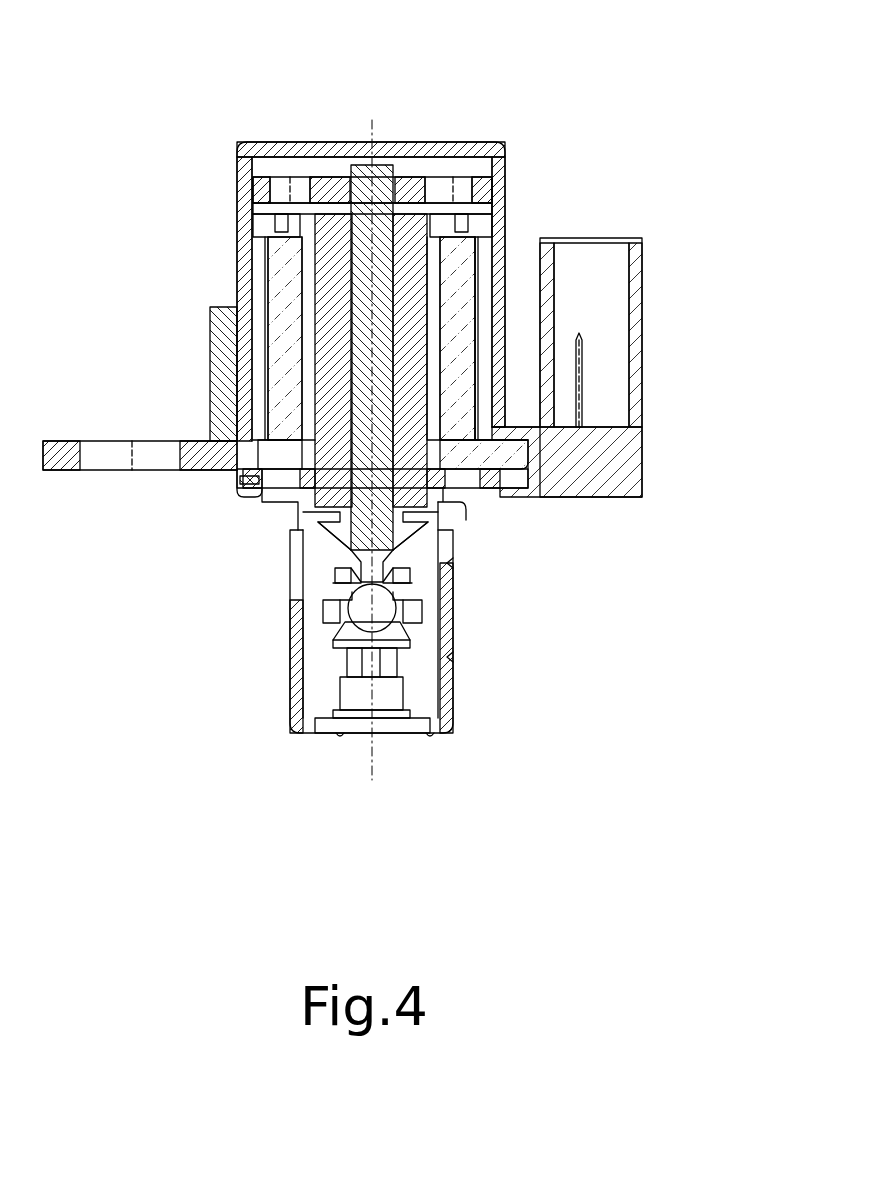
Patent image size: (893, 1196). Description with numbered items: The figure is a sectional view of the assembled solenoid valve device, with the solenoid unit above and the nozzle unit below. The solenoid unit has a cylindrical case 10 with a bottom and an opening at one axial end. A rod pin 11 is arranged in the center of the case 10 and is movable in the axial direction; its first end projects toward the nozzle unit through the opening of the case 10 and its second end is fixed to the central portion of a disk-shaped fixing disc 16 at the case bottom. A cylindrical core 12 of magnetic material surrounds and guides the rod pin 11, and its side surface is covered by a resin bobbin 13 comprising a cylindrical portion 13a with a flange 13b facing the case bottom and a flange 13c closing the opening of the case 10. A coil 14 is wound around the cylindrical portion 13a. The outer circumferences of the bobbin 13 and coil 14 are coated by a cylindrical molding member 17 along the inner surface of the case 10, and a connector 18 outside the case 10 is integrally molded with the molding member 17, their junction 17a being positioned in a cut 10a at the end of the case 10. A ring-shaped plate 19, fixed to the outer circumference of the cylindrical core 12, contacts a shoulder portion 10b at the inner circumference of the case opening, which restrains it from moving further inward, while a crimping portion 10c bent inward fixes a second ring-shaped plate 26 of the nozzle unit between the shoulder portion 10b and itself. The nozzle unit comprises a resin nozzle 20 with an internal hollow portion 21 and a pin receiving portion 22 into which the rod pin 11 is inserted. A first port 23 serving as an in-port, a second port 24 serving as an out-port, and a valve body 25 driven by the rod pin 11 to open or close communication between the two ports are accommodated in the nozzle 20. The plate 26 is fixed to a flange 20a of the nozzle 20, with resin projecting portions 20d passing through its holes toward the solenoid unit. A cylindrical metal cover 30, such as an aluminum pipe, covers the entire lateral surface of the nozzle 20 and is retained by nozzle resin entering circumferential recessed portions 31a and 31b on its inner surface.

The case 10 is at (372, 148).
The cut 10a is at (502, 423).
The shoulder portion 10b is at (238, 462).
The crimping portion 10c is at (258, 492).
The rod pin 11 is at (364, 186).
The cylindrical core 12 is at (418, 225).
The bobbin 13 is at (305, 323).
The cylindrical portion 13a is at (310, 287).
The flange 13b is at (265, 222).
The flange 13c is at (512, 455).
The coil 14 is at (455, 253).
The fixing disc 16 is at (262, 147).
The molding member 17 is at (485, 258).
The junction 17a is at (533, 433).
The connector 18 is at (583, 262).
The plate 19 is at (203, 438).
The nozzle 20 is at (323, 568).
The flange 20a is at (468, 500).
The projecting portion 20d is at (247, 468).
The hollow portion 21 is at (353, 560).
The pin receiving portion 22 is at (443, 526).
The first port 23 is at (370, 703).
The second port 24 is at (365, 614).
The valve body 25 is at (335, 638).
The plate 26 is at (247, 485).
The metal cover 30 is at (297, 695).
The recessed portion 31a is at (445, 570).
The recessed portion 31b is at (445, 665).